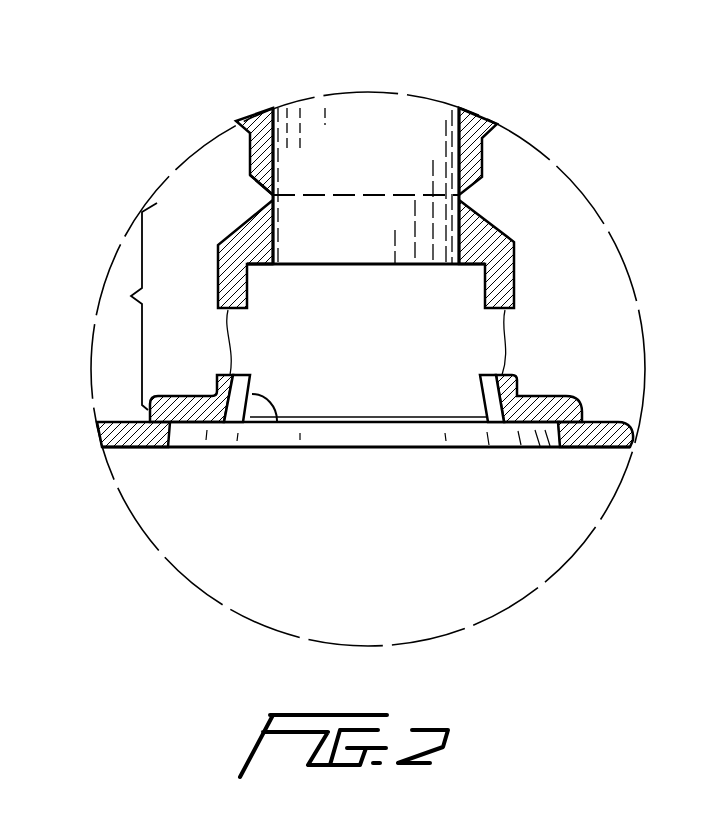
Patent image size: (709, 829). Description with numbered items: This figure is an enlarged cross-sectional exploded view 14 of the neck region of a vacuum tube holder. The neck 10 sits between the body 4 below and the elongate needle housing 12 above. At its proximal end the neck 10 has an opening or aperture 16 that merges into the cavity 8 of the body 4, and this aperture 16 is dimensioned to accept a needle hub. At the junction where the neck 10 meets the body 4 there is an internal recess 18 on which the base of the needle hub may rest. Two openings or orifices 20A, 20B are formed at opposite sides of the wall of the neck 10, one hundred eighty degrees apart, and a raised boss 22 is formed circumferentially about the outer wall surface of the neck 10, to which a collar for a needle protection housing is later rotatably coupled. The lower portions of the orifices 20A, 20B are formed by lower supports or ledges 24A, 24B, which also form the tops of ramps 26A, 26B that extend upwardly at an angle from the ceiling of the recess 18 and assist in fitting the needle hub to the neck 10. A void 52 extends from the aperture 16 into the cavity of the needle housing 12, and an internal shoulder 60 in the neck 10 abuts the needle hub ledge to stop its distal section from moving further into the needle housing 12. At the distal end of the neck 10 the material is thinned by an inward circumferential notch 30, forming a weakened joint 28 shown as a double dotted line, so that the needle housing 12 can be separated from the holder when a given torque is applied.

The body 4 is at (103, 449).
The cavity 8 is at (368, 562).
The neck 10 is at (128, 296).
The elongate needle housing 12 is at (243, 122).
The exploded view 14 is at (540, 150).
The aperture 16 is at (334, 406).
The internal recess 18 is at (216, 436).
The orifice 20A is at (221, 355).
The orifice 20B is at (514, 365).
The raised boss 22 is at (228, 333).
The ledge 24A is at (240, 375).
The ledge 24B is at (480, 374).
The ramp 26A is at (268, 422).
The ramp 26B is at (480, 396).
The weakened joint 28 is at (375, 195).
The inward circumferential notch 30 is at (273, 195).
The void 52 is at (356, 242).
The internal shoulder 60 is at (262, 268).